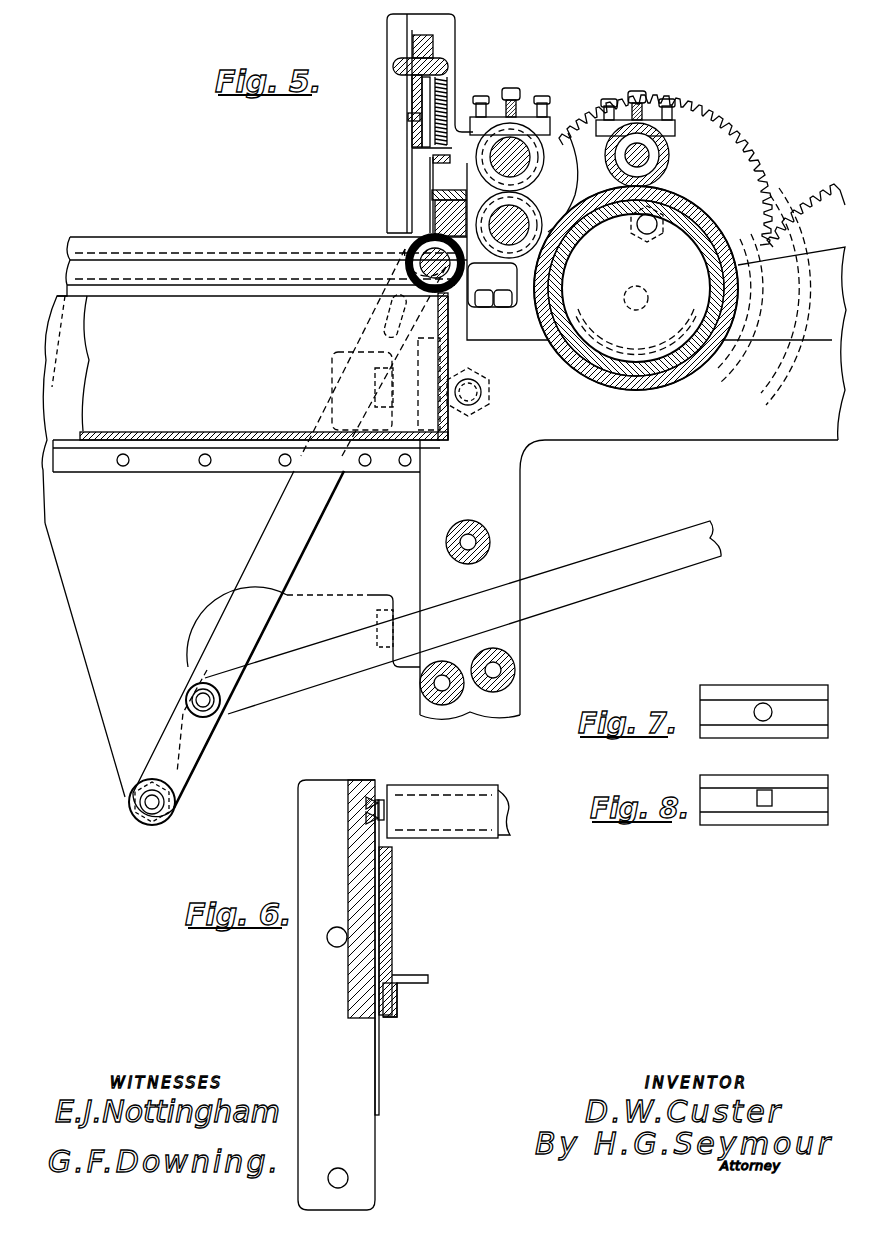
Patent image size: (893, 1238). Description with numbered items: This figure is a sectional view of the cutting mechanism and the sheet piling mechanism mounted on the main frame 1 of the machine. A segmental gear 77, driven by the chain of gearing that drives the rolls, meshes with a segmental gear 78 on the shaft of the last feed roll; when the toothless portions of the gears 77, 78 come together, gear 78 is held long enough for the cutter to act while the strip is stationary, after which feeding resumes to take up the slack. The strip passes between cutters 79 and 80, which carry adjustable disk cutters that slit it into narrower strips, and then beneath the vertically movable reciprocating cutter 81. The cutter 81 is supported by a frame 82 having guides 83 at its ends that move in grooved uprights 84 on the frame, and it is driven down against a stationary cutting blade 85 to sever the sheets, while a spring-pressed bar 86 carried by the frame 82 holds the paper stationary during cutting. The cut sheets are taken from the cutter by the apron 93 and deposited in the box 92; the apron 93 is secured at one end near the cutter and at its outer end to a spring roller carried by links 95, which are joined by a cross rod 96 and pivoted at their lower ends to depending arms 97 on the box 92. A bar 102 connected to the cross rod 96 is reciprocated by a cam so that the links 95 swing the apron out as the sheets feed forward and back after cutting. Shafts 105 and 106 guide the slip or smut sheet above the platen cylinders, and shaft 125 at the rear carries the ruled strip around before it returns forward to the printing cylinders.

In FIG. 5, the main frame 1 is at (520, 512).
In FIG. 5, the segmental gear 77 is at (671, 157).
In FIG. 5, the segmental gear 78 is at (645, 232).
In FIG. 5, the cutter 79 is at (516, 135).
In FIG. 5, the cutter 80 is at (527, 216).
In FIG. 5, the reciprocating cutter 81 is at (433, 97).
In FIG. 5, the frame 82 is at (396, 67).
In FIG. 5, the guides 83 is at (418, 272).
In FIG. 6, the guides 83 is at (366, 803).
In FIG. 7, the guides 83 is at (766, 740).
In FIG. 8, the guides 83 is at (762, 785).
In FIG. 5, the grooved uprights 84 is at (392, 196).
In FIG. 5, the stationary cutting blade 85 is at (450, 201).
In FIG. 5, the spring-pressed bar 86 is at (407, 150).
In FIG. 5, the box 92 is at (190, 462).
In FIG. 6, the box 92 is at (347, 973).
In FIG. 5, the apron 93 is at (428, 250).
In FIG. 6, the apron 93 is at (497, 838).
In FIG. 5, the links 95 is at (318, 522).
In FIG. 6, the links 95 is at (382, 1057).
In FIG. 5, the cross rod 96 is at (220, 712).
In FIG. 5, the depending arms 97 is at (95, 660).
In FIG. 5, the bar 102 is at (650, 575).
In FIG. 5, the shaft 105 is at (432, 693).
In FIG. 5, the shaft 106 is at (469, 528).
In FIG. 5, the shaft 125 is at (517, 669).